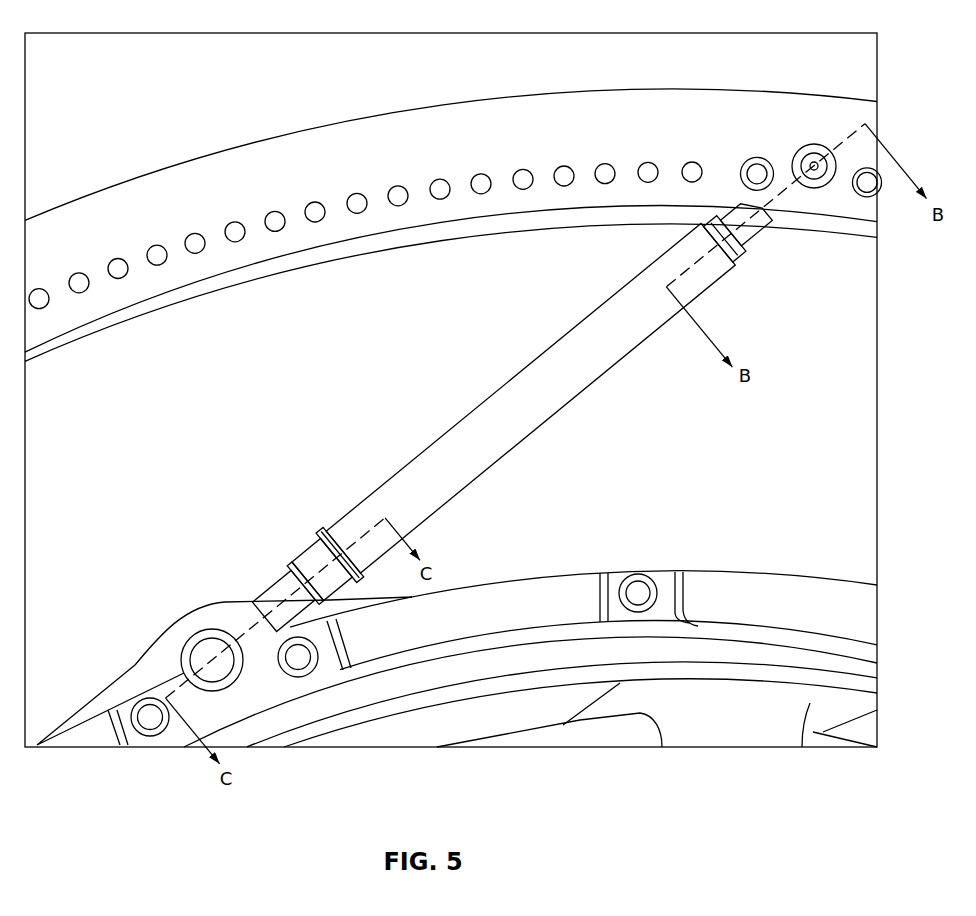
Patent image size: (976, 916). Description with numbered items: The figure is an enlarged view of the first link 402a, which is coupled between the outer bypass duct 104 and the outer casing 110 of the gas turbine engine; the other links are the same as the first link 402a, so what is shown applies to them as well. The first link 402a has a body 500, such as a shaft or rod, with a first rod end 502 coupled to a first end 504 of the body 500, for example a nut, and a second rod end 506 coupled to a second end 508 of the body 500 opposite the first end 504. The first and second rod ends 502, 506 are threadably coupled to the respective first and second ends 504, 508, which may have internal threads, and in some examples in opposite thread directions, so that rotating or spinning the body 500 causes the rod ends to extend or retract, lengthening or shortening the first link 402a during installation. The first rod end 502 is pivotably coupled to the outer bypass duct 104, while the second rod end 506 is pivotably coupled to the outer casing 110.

The outer bypass duct 104 is at (703, 135).
The outer casing 110 is at (130, 670).
The first link 402a is at (408, 392).
The body 500 is at (513, 403).
The first rod end 502 is at (753, 227).
The first end 504 is at (727, 268).
The second rod end 506 is at (265, 598).
The second end 508 is at (293, 563).